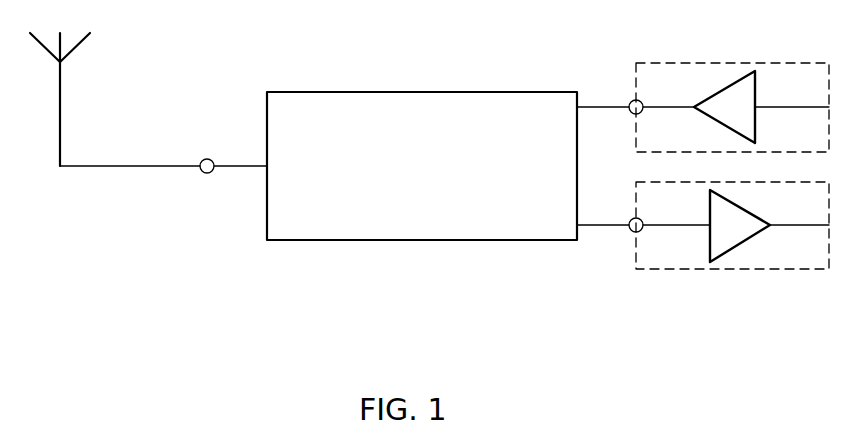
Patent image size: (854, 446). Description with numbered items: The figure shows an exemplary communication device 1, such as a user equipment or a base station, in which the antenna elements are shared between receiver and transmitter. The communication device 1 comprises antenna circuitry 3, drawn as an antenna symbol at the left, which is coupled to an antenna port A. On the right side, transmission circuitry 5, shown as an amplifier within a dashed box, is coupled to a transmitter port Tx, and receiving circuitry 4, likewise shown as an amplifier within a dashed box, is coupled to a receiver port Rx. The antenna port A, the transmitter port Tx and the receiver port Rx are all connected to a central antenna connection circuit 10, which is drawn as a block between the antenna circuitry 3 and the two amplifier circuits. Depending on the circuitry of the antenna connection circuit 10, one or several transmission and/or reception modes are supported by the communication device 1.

The communication device 1 is at (341, 276).
The antenna circuitry 3 is at (60, 91).
The antenna port A is at (208, 159).
The antenna connection circuit 10 is at (422, 166).
The transmitter port Tx is at (632, 101).
The transmission circuitry 5 is at (727, 63).
The receiver port Rx is at (633, 232).
The receiving circuitry 4 is at (725, 270).